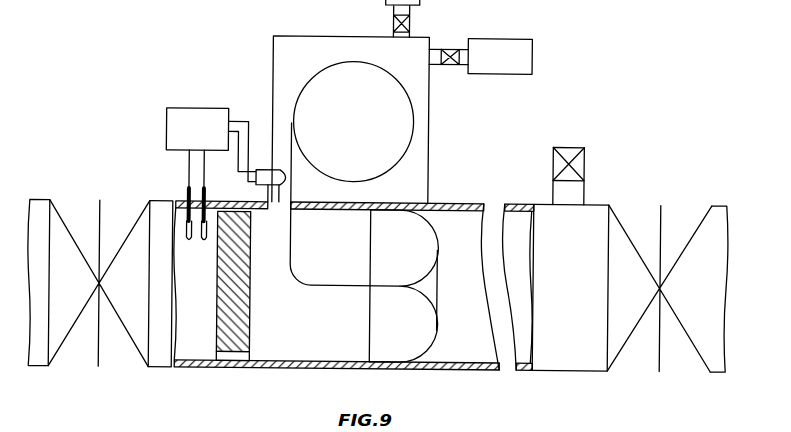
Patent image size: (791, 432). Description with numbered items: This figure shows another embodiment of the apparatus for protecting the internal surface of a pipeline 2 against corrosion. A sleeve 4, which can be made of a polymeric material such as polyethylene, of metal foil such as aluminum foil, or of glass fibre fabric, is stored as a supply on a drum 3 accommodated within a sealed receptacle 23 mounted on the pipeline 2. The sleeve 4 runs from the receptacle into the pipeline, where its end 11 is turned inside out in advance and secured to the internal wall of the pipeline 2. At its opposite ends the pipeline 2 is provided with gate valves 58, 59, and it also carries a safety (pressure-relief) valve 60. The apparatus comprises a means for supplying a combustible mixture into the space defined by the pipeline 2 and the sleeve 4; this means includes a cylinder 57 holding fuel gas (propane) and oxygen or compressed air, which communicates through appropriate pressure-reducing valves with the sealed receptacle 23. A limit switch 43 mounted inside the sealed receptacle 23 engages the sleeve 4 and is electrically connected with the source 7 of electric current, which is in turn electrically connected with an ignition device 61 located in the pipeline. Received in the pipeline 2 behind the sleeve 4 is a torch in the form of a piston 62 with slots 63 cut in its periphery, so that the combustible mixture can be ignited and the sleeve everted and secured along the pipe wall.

The pipeline 2 is at (378, 304).
The drum 3 is at (303, 93).
The sleeve 4 is at (328, 289).
The source of electric current 7 is at (211, 145).
The end of the sleeve 11 is at (458, 363).
The sealed receptacle 23 is at (322, 48).
The limit switch 43 is at (266, 170).
The cylinders 57 is at (494, 39).
The gate valve 58 is at (131, 336).
The gate valve 59 is at (697, 348).
The safety valve 60 is at (569, 147).
The ignition device 61 is at (188, 242).
The piston 62 is at (250, 341).
The slots 63 is at (228, 362).